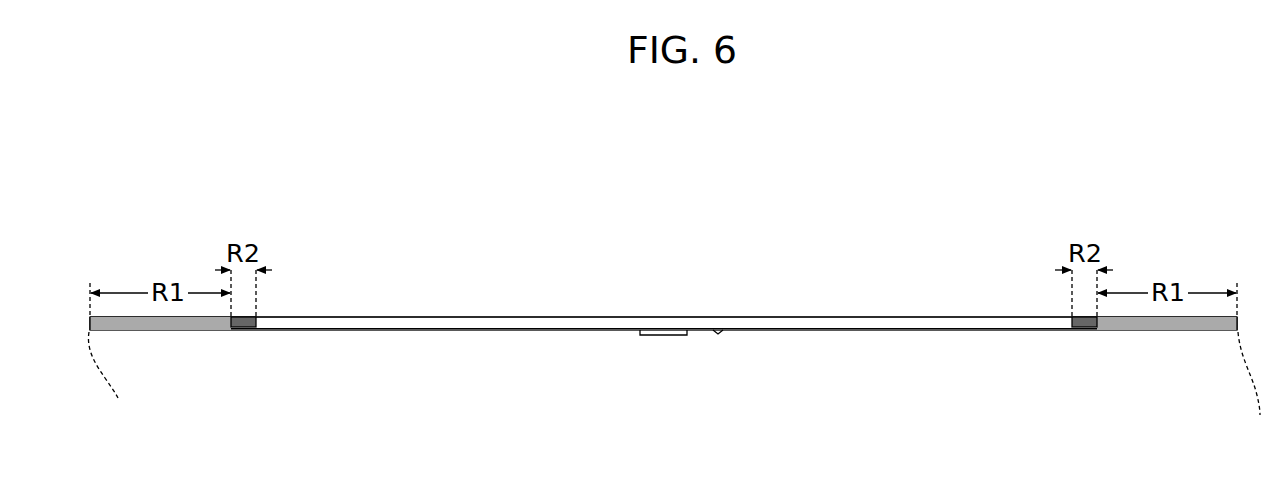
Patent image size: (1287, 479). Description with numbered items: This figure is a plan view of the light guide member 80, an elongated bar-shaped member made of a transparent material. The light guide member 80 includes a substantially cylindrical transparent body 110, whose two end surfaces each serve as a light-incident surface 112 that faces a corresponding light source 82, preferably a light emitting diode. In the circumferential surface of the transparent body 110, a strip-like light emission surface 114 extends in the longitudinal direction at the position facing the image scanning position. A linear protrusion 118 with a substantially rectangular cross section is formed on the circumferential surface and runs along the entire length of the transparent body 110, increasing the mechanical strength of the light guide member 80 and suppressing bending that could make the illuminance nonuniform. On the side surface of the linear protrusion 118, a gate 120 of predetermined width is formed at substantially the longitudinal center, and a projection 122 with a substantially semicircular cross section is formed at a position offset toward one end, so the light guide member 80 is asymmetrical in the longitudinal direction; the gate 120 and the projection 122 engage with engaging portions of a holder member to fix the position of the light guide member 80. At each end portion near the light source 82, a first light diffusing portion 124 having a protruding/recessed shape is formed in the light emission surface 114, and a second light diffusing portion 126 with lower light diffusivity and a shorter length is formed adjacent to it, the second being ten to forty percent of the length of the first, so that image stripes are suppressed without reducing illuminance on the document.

The light guide member 80 is at (198, 149).
The light source 82 is at (681, 390).
The transparent body 110 is at (343, 310).
The light-incident surface 112 is at (88, 318).
The light emission surface 114 is at (495, 317).
The linear protrusion 118 is at (415, 330).
The gate 120 is at (657, 335).
The projection 122 is at (718, 334).
The first light diffusing portion 124 is at (153, 330).
The second light diffusing portion 126 is at (243, 327).